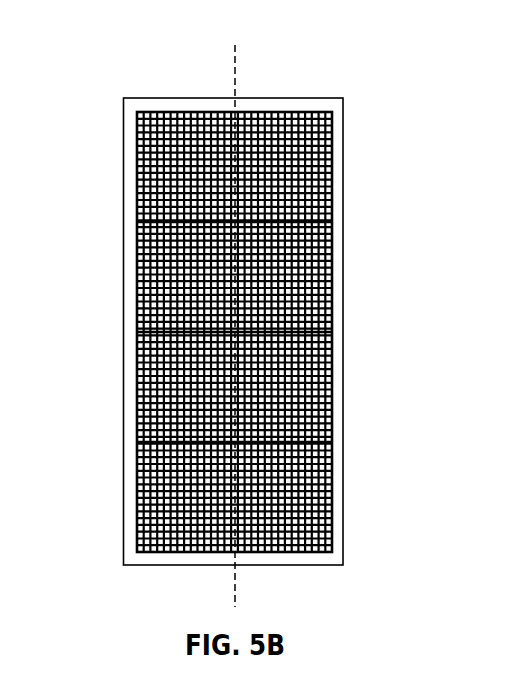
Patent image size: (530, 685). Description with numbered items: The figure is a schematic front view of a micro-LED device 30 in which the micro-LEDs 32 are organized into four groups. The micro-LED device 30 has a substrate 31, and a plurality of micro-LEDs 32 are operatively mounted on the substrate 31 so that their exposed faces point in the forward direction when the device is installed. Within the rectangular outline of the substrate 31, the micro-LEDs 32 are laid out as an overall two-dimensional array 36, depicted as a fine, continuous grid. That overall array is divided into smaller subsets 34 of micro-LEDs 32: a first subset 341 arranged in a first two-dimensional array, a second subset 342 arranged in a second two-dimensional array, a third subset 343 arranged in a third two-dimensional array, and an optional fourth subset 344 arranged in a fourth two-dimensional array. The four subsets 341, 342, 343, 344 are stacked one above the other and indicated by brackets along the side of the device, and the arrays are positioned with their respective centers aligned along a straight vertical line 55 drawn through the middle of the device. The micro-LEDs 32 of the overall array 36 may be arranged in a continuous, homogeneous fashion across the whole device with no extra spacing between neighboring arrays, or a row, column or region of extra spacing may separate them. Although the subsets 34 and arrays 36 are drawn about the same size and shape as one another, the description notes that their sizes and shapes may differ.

The micro-LED device 30 is at (240, 310).
The micro-LEDs 32 is at (240, 310).
The 2D arrays 36 is at (240, 310).
The substrate 31 is at (262, 331).
The centerline 55 is at (235, 73).
The subsets of micro-LEDs 34 is at (305, 331).
The first subset 341 is at (357, 442).
The second subset 342 is at (357, 332).
The third subset 343 is at (357, 221).
The fourth subset 344 is at (357, 110).